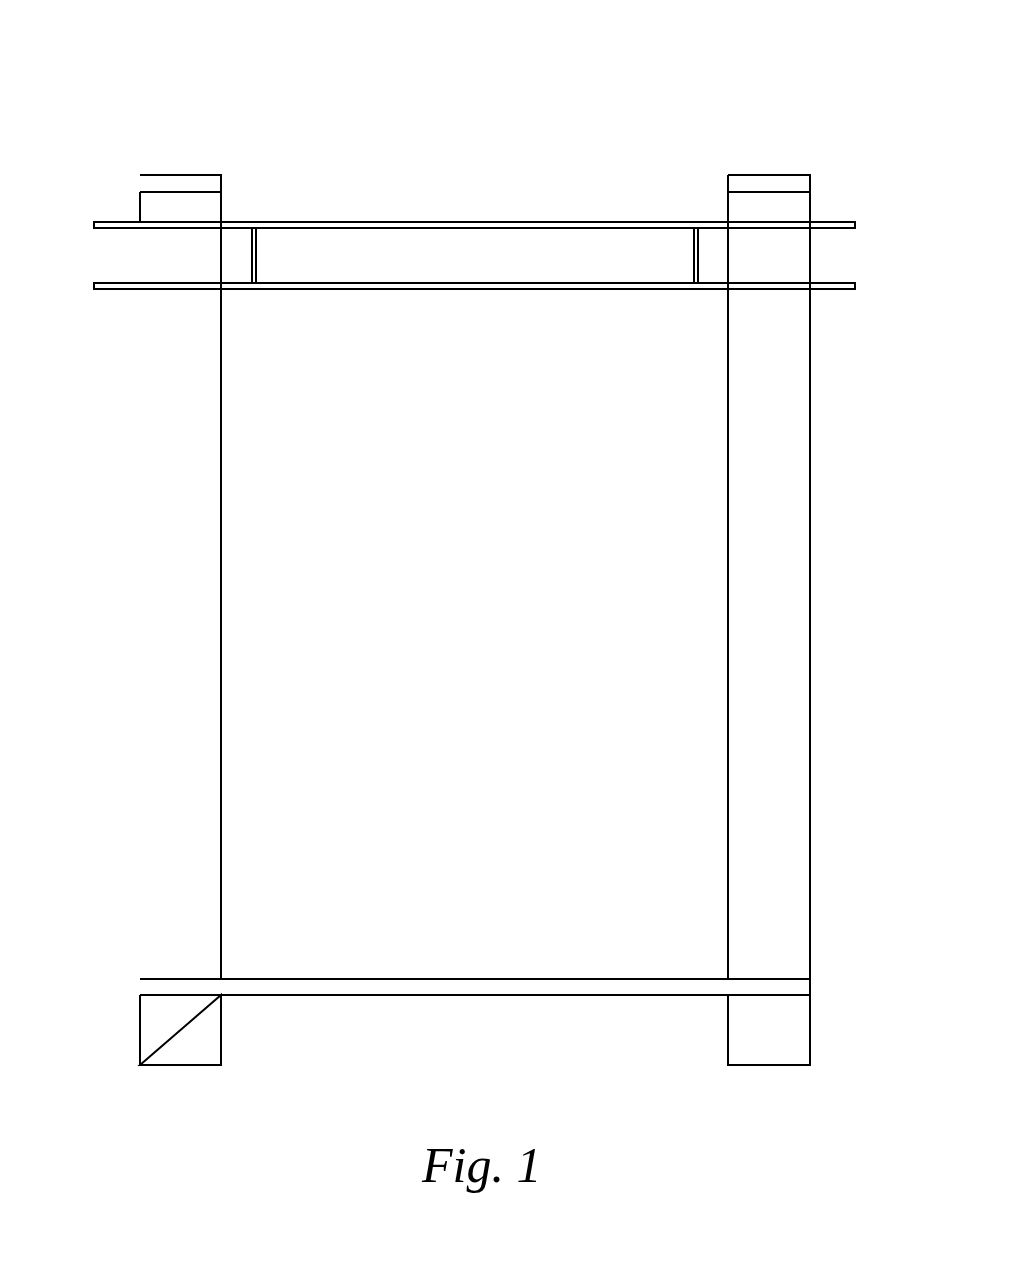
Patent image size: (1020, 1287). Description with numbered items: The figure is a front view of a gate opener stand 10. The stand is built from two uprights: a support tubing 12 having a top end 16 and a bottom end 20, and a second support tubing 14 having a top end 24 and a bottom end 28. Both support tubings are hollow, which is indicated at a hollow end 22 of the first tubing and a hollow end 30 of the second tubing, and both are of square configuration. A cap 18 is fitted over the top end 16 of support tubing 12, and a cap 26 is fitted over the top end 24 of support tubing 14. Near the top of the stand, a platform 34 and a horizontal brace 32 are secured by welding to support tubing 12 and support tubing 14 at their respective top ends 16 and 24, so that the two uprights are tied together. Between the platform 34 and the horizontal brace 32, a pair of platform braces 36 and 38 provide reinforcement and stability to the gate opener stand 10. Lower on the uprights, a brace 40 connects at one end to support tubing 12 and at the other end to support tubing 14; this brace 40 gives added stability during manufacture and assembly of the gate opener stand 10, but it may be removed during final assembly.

The gate opener stand 10 is at (713, 125).
The support tubing 12 is at (140, 568).
The support tubing 14 is at (810, 568).
The top end 16 is at (140, 206).
The cap 18 is at (187, 175).
The bottom end 20 is at (140, 1030).
The hollow end 22 is at (181, 1066).
The top end 24 is at (810, 208).
The cap 26 is at (772, 175).
The bottom end 28 is at (810, 1030).
The hollow end 30 is at (768, 1066).
The horizontal brace 32 is at (390, 290).
The platform 34 is at (472, 222).
The platform brace 36 is at (256, 258).
The platform brace 38 is at (694, 262).
The brace 40 is at (473, 979).